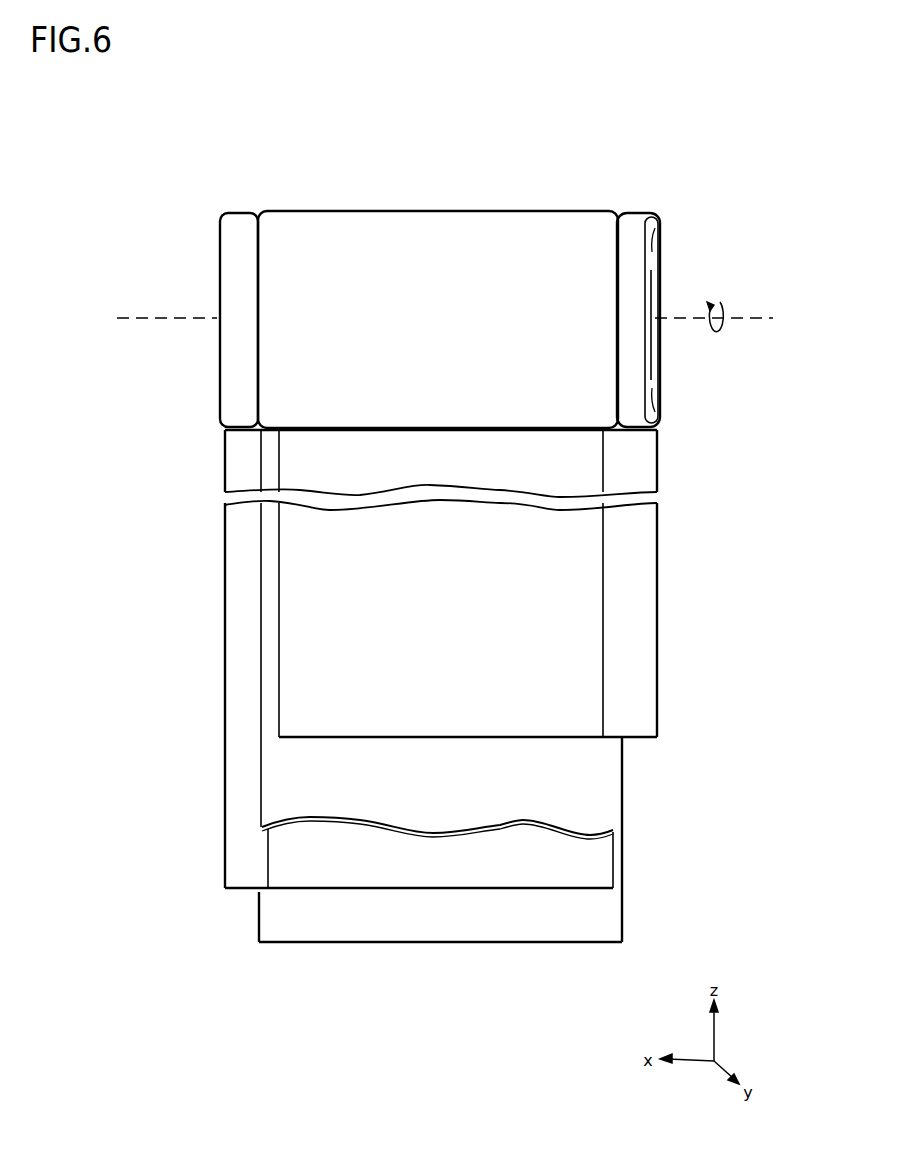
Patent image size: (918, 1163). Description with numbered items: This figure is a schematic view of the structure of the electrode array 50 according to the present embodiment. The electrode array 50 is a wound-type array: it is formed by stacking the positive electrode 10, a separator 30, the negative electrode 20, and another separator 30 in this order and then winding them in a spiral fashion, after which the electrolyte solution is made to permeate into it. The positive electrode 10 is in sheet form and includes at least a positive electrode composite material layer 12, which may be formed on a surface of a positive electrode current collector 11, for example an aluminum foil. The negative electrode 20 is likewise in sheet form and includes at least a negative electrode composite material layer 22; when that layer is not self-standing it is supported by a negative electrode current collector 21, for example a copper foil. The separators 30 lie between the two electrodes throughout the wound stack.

The electrode array 50 is at (200, 163).
The positive electrode 10 is at (768, 515).
The positive electrode current collector 11 is at (640, 612).
The positive electrode composite material layer 12 is at (597, 565).
The negative electrode 20 is at (98, 735).
The negative electrode current collector 21 is at (226, 792).
The negative electrode composite material layer 22 is at (310, 868).
The separator 30 is at (620, 797).